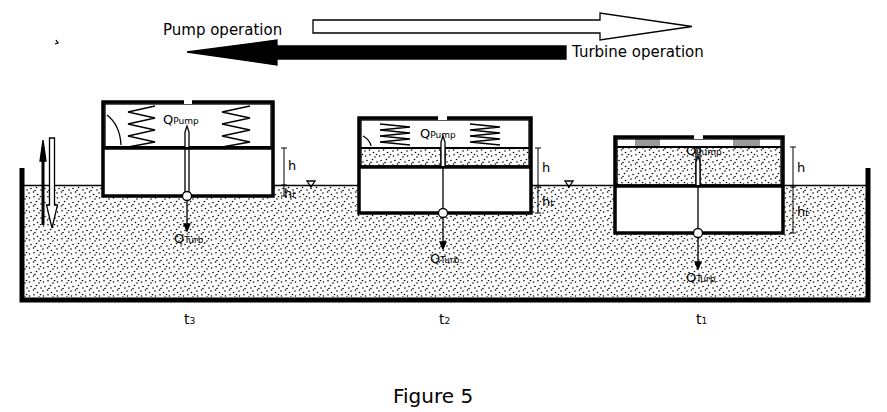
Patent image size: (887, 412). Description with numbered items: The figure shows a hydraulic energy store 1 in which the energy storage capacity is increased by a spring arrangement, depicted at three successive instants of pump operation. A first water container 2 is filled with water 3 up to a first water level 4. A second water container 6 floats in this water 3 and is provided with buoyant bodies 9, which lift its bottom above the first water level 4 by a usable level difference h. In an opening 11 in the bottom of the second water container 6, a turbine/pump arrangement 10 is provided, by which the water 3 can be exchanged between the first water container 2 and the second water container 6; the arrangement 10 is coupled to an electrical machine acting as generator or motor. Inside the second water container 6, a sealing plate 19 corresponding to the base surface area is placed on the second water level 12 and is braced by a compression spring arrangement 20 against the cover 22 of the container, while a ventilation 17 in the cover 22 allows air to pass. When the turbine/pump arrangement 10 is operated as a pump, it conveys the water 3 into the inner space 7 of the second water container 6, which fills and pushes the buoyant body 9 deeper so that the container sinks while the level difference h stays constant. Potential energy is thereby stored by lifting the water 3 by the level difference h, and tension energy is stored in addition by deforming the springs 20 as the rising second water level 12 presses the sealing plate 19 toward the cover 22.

The energy storage system 1 is at (58, 43).
The first water container 2 is at (135, 296).
The water 3 is at (445, 222).
The first water level 4 is at (313, 180).
The second water container 6 is at (101, 196).
The inner space 7 is at (268, 126).
The buoyant body 9 is at (443, 184).
The turbine/pump arrangement 10 is at (183, 193).
The opening 11 is at (183, 205).
The second water level 12 is at (100, 116).
The ventilation 17 is at (185, 99).
The sealing plate 19 is at (104, 134).
The compression spring arrangement 20 is at (125, 110).
The cover 22 is at (208, 100).